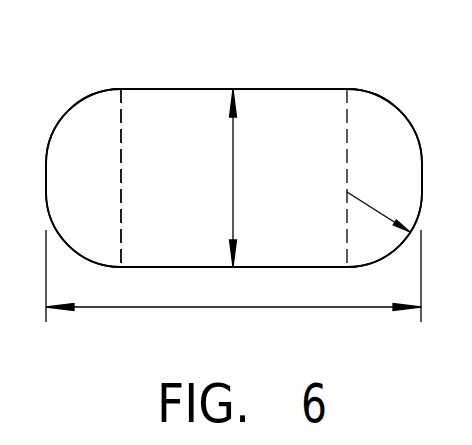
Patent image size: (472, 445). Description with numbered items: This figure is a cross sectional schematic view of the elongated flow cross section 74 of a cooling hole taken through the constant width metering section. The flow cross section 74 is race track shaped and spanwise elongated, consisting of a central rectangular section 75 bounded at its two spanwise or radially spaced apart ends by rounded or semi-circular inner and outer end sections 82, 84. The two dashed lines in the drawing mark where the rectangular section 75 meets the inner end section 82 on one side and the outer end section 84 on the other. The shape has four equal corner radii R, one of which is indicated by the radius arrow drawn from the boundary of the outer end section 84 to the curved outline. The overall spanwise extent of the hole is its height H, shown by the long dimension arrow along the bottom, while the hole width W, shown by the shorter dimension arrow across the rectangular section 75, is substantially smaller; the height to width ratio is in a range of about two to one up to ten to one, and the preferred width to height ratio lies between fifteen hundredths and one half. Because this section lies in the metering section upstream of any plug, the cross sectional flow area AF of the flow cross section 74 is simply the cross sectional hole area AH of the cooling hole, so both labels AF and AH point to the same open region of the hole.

The flow cross section 74 is at (261, 110).
The rectangular section 75 is at (194, 191).
The inner end section 82 is at (101, 191).
The outer end section 84 is at (404, 191).
The cross sectional flow area AF is at (152, 130).
The cross sectional hole area AH is at (185, 107).
The hole width W is at (233, 178).
The spanwise height H is at (233, 307).
The corner radius R is at (358, 204).